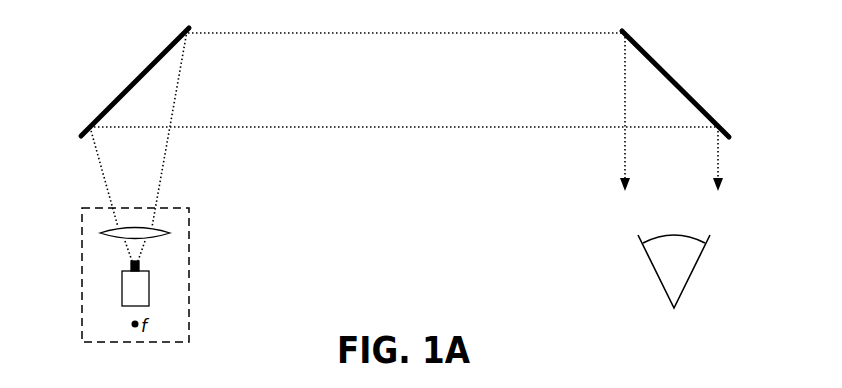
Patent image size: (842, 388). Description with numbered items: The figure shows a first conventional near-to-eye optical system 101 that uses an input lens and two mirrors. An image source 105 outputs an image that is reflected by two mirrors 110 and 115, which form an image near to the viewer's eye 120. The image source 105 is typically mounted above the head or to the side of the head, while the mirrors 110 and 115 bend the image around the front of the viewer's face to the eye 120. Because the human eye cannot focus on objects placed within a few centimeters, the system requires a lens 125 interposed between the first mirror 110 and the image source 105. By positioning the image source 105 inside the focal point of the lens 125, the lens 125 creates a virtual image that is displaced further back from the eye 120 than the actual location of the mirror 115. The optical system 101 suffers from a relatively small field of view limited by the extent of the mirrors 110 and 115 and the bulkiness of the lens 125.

The near-to-eye optical system 101 is at (412, 187).
The image source 105 is at (122, 287).
The first mirror 110 is at (98, 116).
The second mirror 115 is at (685, 90).
The eye 120 is at (688, 278).
The lens 125 is at (103, 232).